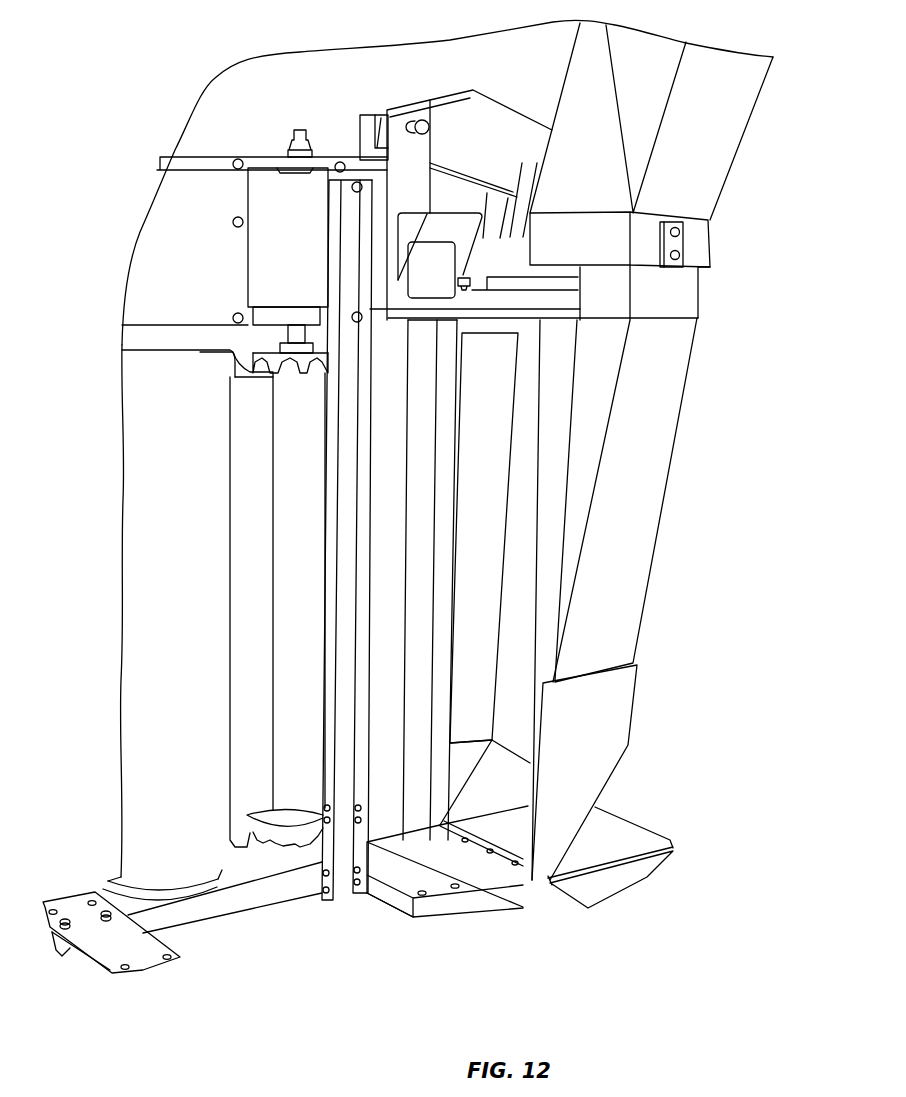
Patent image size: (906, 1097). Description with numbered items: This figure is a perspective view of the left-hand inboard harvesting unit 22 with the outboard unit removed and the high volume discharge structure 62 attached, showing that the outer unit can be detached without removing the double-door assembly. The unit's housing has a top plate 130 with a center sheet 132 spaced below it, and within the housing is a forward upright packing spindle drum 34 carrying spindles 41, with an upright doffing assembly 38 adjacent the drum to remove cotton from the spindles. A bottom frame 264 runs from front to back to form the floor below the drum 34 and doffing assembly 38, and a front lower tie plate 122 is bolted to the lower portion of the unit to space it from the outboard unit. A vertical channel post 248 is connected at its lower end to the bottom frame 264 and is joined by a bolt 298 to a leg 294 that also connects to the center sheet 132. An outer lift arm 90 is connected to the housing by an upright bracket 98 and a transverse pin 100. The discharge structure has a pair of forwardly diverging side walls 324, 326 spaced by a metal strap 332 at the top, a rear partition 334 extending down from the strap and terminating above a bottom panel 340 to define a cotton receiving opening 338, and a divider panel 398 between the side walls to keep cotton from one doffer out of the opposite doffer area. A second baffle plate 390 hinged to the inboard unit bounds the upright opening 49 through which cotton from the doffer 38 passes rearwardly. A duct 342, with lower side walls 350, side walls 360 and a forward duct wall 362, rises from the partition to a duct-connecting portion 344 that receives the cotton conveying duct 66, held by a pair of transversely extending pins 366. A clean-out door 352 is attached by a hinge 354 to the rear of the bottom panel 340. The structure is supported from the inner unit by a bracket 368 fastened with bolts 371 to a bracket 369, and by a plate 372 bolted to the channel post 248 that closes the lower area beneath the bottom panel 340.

The harvesting unit 22 is at (253, 957).
The forward upright packing spindle drum 34 is at (183, 873).
The doffing assembly 38 is at (295, 847).
The spindles 41 is at (250, 377).
The upright opening 49 is at (380, 520).
The high volume discharge structure 62 is at (567, 913).
The cotton conveying duct 66 is at (715, 128).
The outer lift arm 90 is at (490, 110).
The upright bracket 98 is at (400, 123).
The transverse pin 100 is at (425, 130).
The front lower tie plate 122 is at (115, 950).
The top plate 130 is at (212, 157).
The center sheet 132 is at (288, 318).
The vertical channel post 248 is at (325, 545).
The bottom frame 264 is at (308, 867).
The leg 294 is at (325, 313).
The bolt 298 is at (352, 188).
The side wall 324 is at (427, 418).
The side wall 326 is at (563, 423).
The metal strap 332 is at (507, 320).
The rear partition 334 is at (510, 672).
The cotton receiving opening 338 is at (497, 789).
The bottom panel 340 is at (480, 867).
The duct 342 is at (568, 622).
The duct-connecting portion 344 is at (680, 300).
The lower side wall 350 is at (557, 733).
The clean-out door 352 is at (645, 822).
The hinge 354 is at (550, 882).
The side wall 360 is at (616, 474).
The forward duct wall 362 is at (603, 350).
The transversely extending pin 366 is at (683, 253).
The bracket 368 is at (516, 280).
The bracket 369 is at (460, 280).
The bolt 371 is at (473, 290).
The plate 372 is at (395, 900).
The second baffle plate 390 is at (382, 377).
The divider panel 398 is at (463, 597).